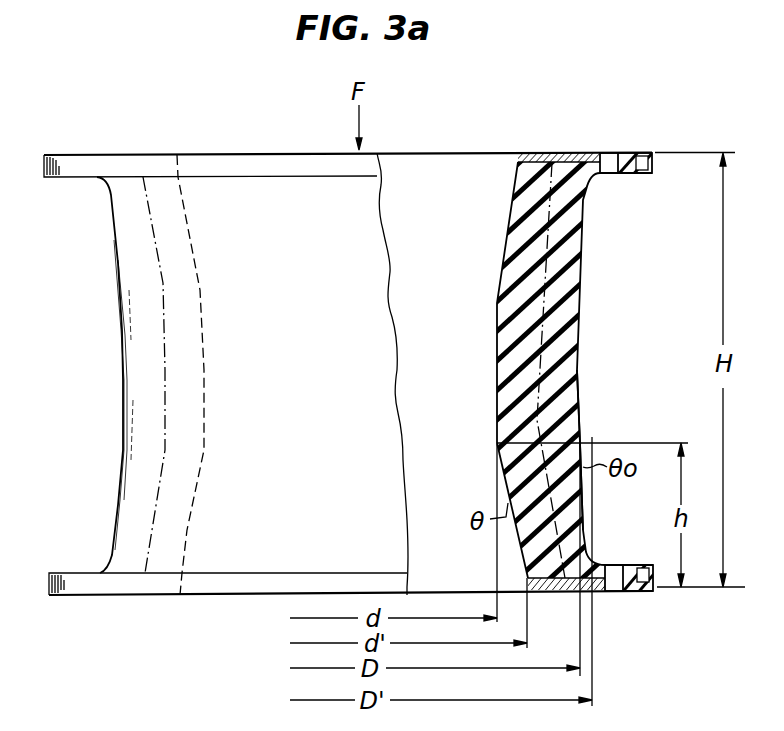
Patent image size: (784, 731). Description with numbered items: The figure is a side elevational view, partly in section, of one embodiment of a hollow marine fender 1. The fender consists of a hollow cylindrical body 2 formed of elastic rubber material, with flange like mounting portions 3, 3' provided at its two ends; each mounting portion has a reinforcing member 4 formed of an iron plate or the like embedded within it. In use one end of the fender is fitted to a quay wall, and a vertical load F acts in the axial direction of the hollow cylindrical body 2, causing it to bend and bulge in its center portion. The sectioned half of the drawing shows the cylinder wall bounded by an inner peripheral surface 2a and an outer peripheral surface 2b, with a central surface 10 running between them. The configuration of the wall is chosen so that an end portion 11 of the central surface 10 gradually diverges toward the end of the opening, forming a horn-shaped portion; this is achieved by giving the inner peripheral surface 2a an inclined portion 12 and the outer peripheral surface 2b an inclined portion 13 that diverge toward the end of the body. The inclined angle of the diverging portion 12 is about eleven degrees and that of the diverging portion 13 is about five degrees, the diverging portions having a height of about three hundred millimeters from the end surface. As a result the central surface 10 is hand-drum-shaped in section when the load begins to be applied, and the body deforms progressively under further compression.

The hollow marine fender 1 is at (578, 343).
The hollow cylindrical body 2 is at (563, 283).
The inner peripheral surface 2a is at (497, 386).
The outer peripheral surface 2b is at (581, 398).
The flange like mounting portion 3 is at (225, 563).
The flange like mounting portion 3' is at (208, 192).
The reinforcing member 4 is at (573, 156).
The central surface 10 is at (163, 287).
The end portion 11 is at (547, 520).
The inclined portion 12 is at (527, 568).
The inclined portion 13 is at (597, 443).